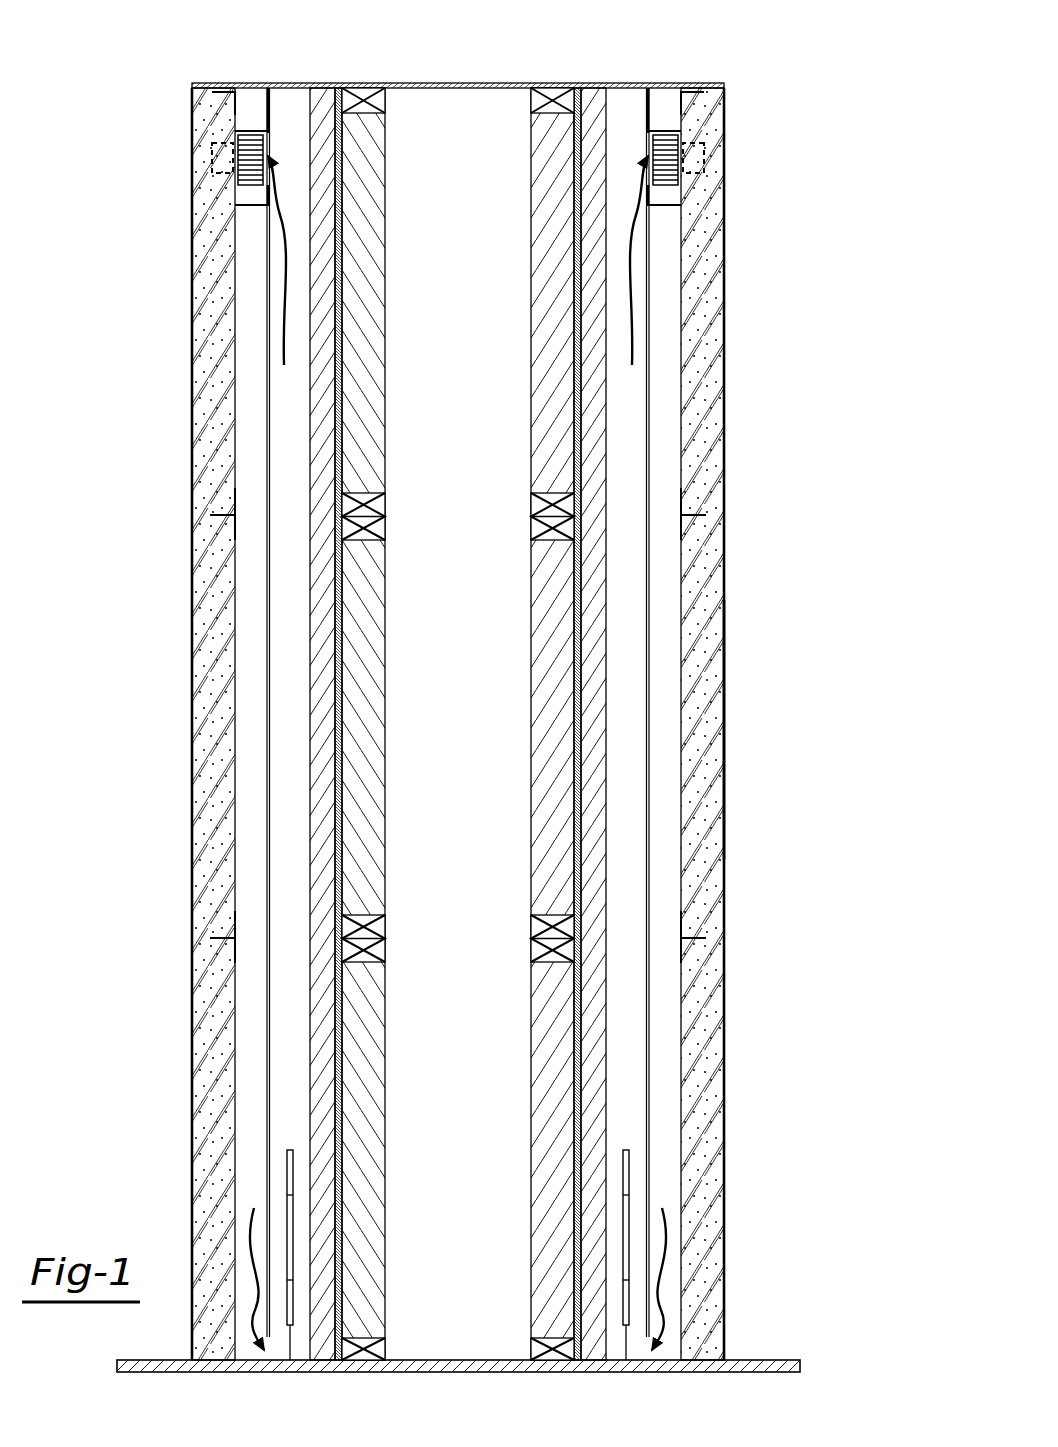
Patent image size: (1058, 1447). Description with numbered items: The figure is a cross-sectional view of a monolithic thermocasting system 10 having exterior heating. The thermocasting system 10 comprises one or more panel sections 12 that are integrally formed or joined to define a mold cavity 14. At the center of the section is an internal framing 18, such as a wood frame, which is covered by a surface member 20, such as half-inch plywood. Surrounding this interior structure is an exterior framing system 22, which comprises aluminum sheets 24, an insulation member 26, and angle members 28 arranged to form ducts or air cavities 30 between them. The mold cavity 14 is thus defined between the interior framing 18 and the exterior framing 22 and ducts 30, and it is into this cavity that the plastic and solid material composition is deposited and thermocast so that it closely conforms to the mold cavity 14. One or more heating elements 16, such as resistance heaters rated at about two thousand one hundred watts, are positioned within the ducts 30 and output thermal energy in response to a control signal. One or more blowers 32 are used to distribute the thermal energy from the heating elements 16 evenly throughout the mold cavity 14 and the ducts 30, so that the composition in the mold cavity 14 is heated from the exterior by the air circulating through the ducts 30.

The thermocasting system 10 is at (210, 52).
The panel section 12 is at (192, 440).
The mold cavity 14 is at (600, 430).
The heating element 16 is at (629, 1170).
The internal framing 18 is at (553, 97).
The surface member 20 is at (583, 103).
The exterior framing system 22 is at (724, 835).
The aluminum sheet 24 is at (724, 723).
The insulation member 26 is at (703, 998).
The angle member 28 is at (683, 515).
The duct 30 is at (660, 323).
The blower 32 is at (662, 160).